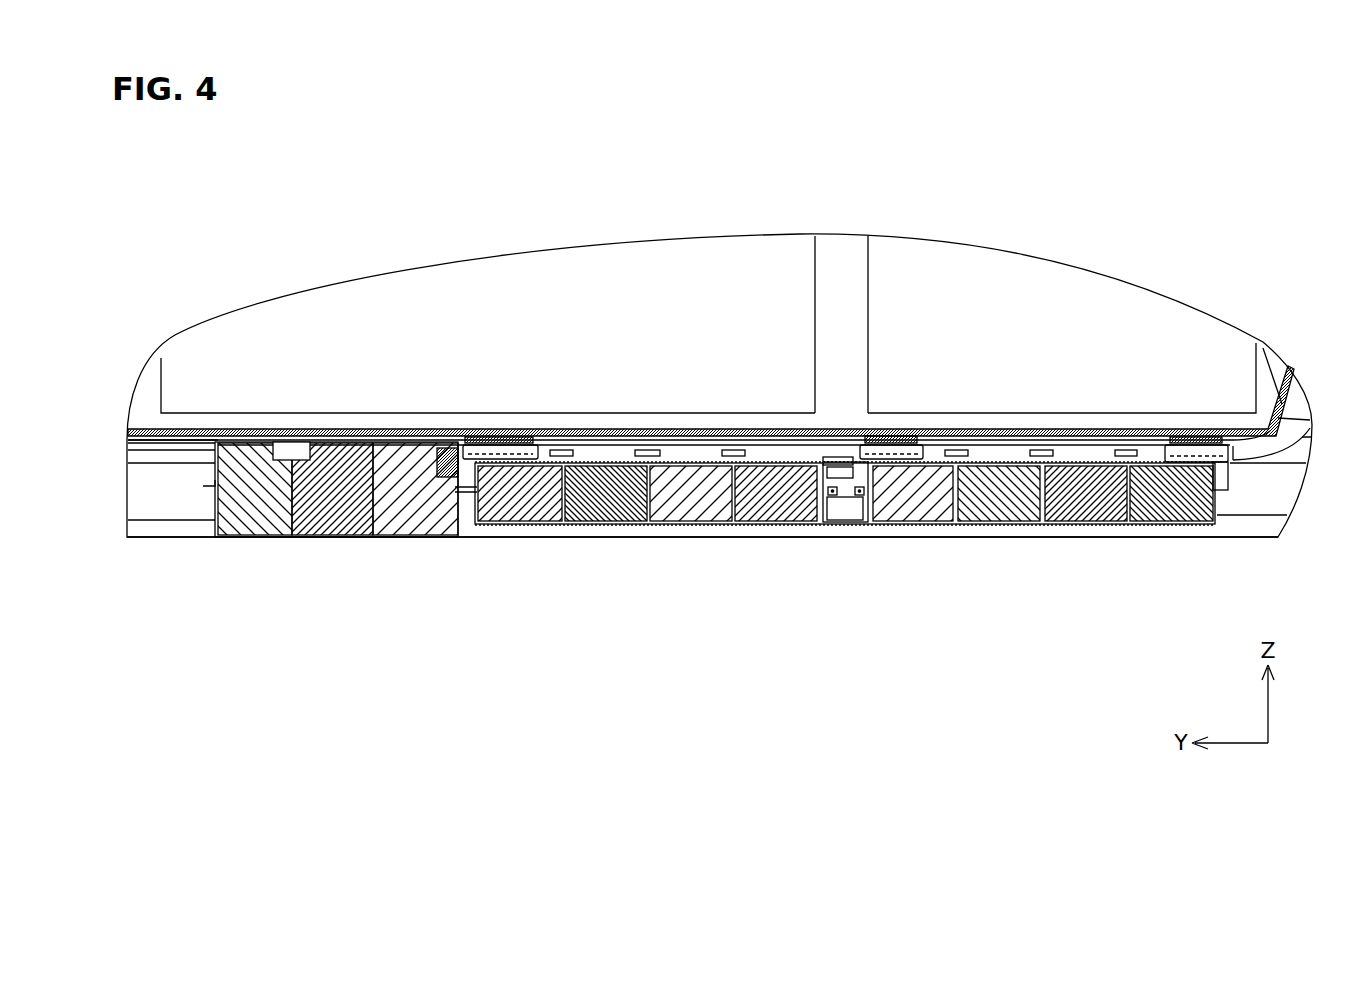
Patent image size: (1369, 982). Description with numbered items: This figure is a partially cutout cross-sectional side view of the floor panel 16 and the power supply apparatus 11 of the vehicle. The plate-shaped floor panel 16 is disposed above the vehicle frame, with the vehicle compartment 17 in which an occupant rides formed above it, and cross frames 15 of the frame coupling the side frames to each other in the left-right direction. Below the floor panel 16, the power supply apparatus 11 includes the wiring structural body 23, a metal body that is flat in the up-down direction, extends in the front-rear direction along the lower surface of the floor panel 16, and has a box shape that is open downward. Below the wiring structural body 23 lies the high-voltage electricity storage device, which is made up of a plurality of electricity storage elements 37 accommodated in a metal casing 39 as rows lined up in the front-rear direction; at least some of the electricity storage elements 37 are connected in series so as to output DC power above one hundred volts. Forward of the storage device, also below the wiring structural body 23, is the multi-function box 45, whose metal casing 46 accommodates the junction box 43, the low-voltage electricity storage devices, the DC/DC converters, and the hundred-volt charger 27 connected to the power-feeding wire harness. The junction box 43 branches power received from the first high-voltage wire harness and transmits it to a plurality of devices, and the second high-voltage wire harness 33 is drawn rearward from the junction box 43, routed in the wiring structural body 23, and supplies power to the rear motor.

The power supply apparatus 11 is at (645, 547).
The cross frame 15 is at (497, 442).
The floor panel 16 is at (1279, 390).
The vehicle compartment 17 is at (812, 266).
The wiring structural body 23 is at (612, 452).
The 100-V charger 27 is at (258, 510).
The second high-voltage wire harness 33 is at (1283, 446).
The electricity storage element 37 is at (527, 510).
The metal casing 39 is at (847, 523).
The junction box 43 is at (415, 510).
The multi-function box 45 is at (450, 609).
The casing 46 is at (390, 540).